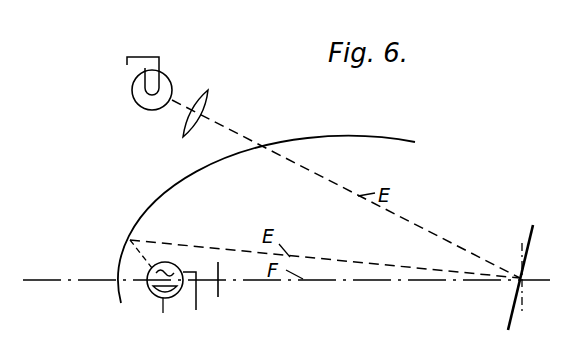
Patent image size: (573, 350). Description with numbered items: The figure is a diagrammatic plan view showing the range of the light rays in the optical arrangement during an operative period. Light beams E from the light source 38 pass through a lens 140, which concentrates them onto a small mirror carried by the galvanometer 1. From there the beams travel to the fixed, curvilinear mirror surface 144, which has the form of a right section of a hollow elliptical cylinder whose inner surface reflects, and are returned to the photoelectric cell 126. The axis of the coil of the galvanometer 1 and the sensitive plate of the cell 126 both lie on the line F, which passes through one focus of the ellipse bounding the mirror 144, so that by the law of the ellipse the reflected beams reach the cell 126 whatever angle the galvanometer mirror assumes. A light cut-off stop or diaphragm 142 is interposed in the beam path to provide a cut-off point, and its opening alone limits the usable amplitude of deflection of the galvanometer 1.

The light source 38 is at (140, 105).
The lens 140 is at (205, 102).
The curvilinear mirror surface 144 is at (207, 166).
The photoelectric cell 126 is at (148, 288).
The light cut-off stop 142 is at (219, 269).
The galvanometer 1 is at (534, 240).